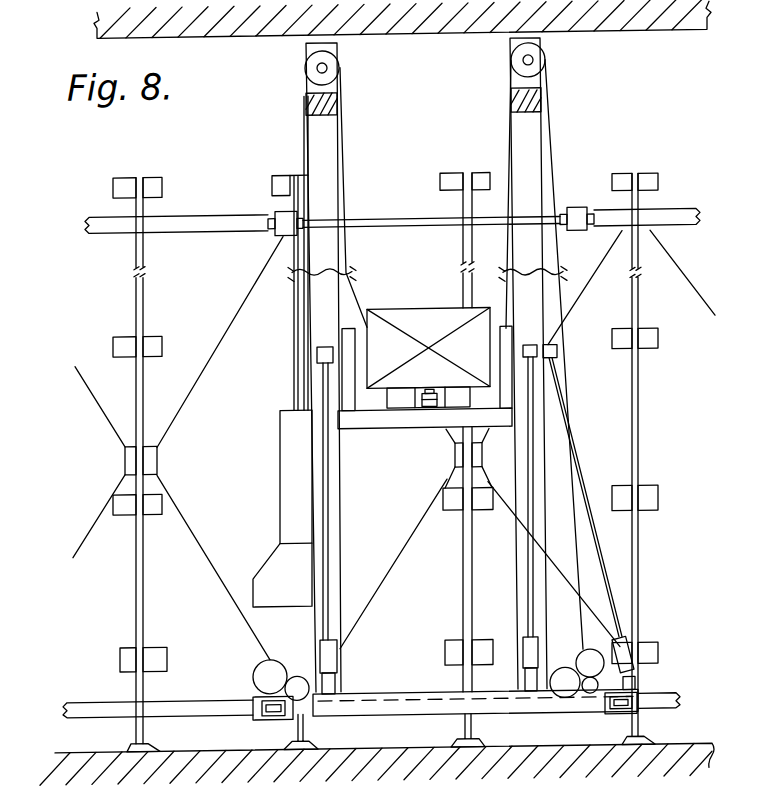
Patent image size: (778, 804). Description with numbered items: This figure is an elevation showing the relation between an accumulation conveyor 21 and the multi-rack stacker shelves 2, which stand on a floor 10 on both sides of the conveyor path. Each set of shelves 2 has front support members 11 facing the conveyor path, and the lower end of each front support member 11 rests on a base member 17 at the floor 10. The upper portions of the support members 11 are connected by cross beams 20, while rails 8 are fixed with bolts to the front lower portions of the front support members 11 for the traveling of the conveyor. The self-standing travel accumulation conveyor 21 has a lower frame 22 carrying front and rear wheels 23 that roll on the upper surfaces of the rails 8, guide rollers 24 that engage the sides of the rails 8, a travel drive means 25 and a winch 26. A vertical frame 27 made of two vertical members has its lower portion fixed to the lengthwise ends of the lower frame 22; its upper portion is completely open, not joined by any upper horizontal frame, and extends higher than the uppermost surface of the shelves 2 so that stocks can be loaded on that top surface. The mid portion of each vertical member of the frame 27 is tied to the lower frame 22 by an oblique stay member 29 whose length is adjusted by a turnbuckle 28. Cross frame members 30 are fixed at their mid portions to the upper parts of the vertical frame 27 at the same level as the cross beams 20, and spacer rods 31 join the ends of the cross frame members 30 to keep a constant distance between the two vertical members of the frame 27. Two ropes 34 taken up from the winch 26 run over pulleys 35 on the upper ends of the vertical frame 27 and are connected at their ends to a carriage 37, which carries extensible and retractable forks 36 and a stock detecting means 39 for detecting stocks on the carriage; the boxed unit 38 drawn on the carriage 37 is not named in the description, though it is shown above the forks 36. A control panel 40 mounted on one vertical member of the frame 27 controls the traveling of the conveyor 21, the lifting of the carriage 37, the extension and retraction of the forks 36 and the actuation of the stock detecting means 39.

The multi-rack stacker shelves 2 is at (643, 352).
The rails 8 is at (660, 704).
The floor 10 is at (712, 751).
The front support members 11 is at (135, 276).
The base member 17 is at (134, 736).
The cross beams 20 is at (680, 216).
The accumulation conveyor 21 is at (420, 690).
The lower frame 22 is at (381, 697).
The wheels 23 is at (294, 705).
The guide rollers 24 is at (254, 701).
The travel drive means 25 is at (256, 669).
The winch 26 is at (591, 662).
The vertical frame 27 is at (327, 173).
The turnbuckle 28 is at (341, 653).
The oblique stay member 29 is at (330, 586).
The cross frame members 30 is at (276, 210).
The spacer rods 31 is at (401, 218).
The ropes 34 is at (346, 94).
The pulleys 35 is at (306, 68).
The forks 36 is at (400, 404).
The carriage 37 is at (373, 429).
The hoist box 38 is at (433, 310).
The stock detecting means 39 is at (440, 402).
The control panel 40 is at (280, 543).